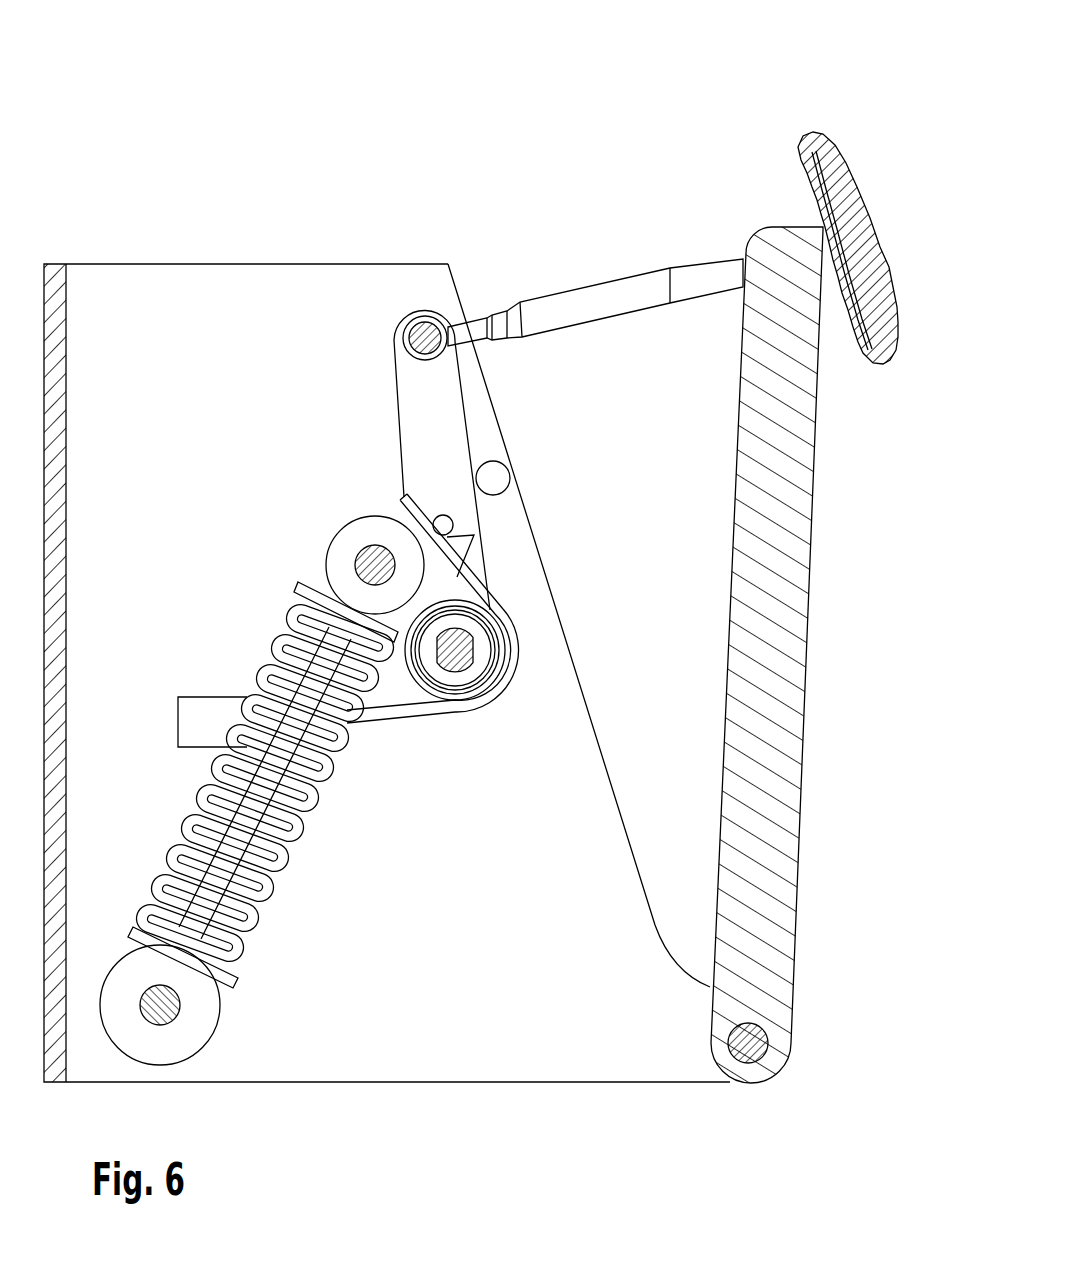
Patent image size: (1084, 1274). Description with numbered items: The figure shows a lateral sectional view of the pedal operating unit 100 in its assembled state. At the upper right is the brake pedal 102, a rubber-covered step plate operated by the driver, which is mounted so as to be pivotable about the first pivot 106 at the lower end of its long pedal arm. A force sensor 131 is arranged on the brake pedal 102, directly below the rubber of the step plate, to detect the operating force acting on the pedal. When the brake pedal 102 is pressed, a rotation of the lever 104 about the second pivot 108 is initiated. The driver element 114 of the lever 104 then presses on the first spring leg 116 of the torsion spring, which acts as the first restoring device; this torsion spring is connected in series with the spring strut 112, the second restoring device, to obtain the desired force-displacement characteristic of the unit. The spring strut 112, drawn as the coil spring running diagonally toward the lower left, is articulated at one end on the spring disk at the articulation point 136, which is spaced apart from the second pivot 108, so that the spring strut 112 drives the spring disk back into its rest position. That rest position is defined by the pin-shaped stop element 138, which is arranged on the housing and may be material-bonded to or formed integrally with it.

The pedal operating unit 100 is at (624, 80).
The brake pedal 102 is at (868, 220).
The lever 104 is at (435, 405).
The first pivot 106 is at (747, 1045).
The second pivot 108 is at (453, 653).
The spring strut 112 is at (338, 845).
The driver element 114 is at (452, 523).
The first spring leg 116 is at (450, 563).
The force sensor 131 is at (795, 197).
The articulation point 136 is at (372, 562).
The stop element 138 is at (493, 480).